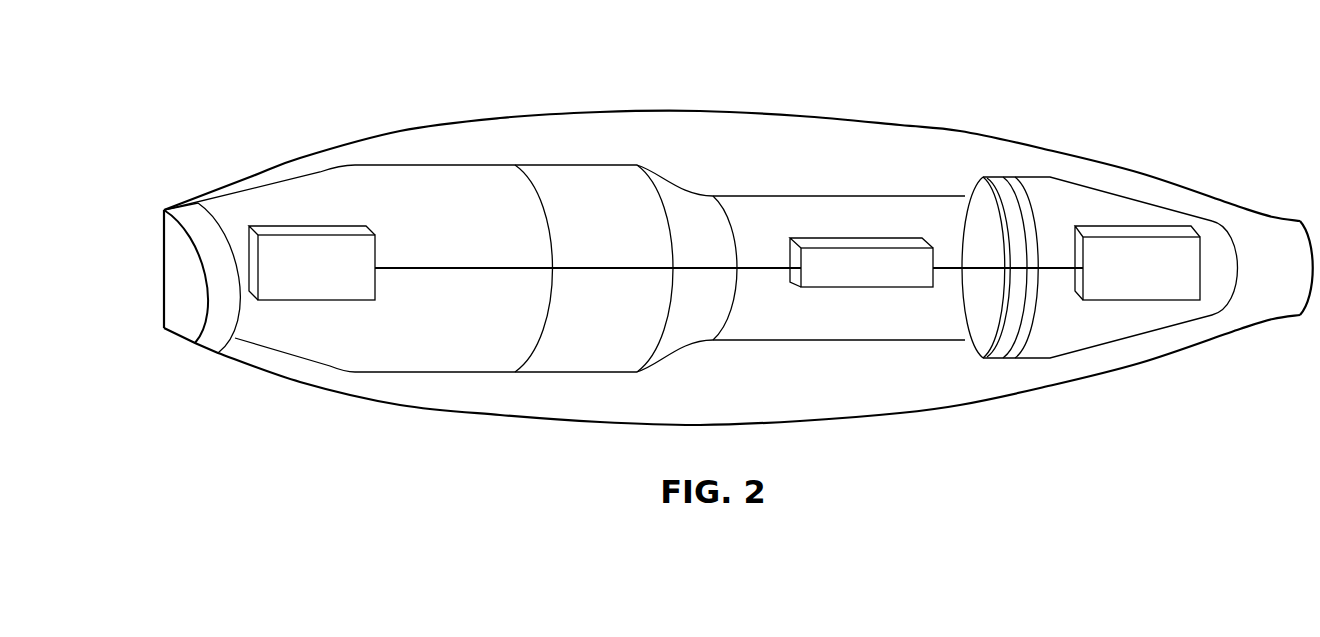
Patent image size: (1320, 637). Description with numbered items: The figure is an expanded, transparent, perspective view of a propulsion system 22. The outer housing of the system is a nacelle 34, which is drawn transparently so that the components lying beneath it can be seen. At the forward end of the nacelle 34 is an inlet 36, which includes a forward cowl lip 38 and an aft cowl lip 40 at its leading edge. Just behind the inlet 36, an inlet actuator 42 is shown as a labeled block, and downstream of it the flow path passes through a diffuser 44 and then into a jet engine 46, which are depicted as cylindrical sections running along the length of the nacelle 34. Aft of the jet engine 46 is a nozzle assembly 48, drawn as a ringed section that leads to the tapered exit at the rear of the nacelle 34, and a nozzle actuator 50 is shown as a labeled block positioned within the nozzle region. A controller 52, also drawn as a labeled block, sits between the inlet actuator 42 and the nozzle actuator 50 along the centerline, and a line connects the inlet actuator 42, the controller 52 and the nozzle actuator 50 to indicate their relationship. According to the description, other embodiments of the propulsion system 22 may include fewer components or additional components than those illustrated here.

The propulsion system 22 is at (1134, 66).
The nacelle 34 is at (908, 124).
The inlet 36 is at (154, 305).
The forward cowl lip 38 is at (172, 233).
The aft cowl lip 40 is at (230, 312).
The inlet actuator 42 is at (340, 226).
The diffuser 44 is at (415, 165).
The jet engine 46 is at (578, 165).
The nozzle assembly 48 is at (1033, 177).
The nozzle actuator 50 is at (1128, 226).
The controller 52 is at (842, 238).